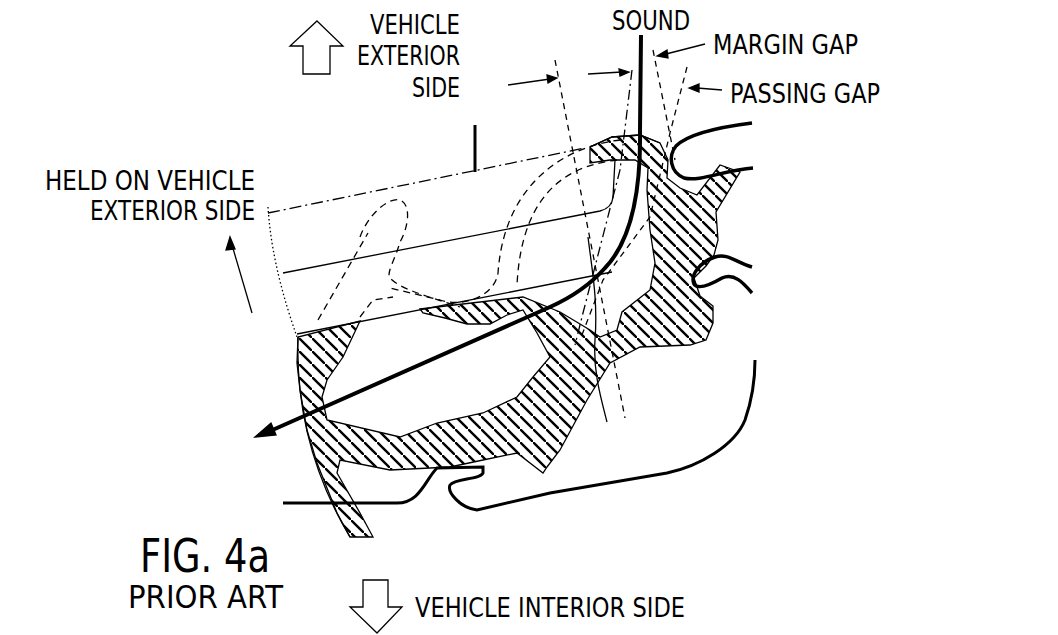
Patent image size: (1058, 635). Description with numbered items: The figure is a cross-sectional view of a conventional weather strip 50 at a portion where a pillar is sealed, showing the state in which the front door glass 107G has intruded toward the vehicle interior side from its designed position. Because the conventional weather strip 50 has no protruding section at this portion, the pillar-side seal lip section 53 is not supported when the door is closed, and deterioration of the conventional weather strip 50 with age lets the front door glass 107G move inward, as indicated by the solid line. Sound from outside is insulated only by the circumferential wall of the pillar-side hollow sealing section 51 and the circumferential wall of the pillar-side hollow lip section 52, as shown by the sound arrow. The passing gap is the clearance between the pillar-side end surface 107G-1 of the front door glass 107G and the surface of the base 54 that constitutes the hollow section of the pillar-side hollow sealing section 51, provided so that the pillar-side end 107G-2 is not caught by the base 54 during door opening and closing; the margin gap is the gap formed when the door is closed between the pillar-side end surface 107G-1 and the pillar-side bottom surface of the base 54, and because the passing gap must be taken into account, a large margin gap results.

The conventional weather strip 50 is at (196, 366).
The pillar-side hollow sealing section 51 is at (612, 138).
The pillar-side hollow lip section 52 is at (320, 375).
The pillar-side seal lip section 53 is at (383, 227).
The base 54 is at (621, 259).
The front door glass 107G is at (438, 270).
The pillar-side end surface 107G-1 is at (563, 245).
The pillar-side end 107G-2 is at (697, 313).